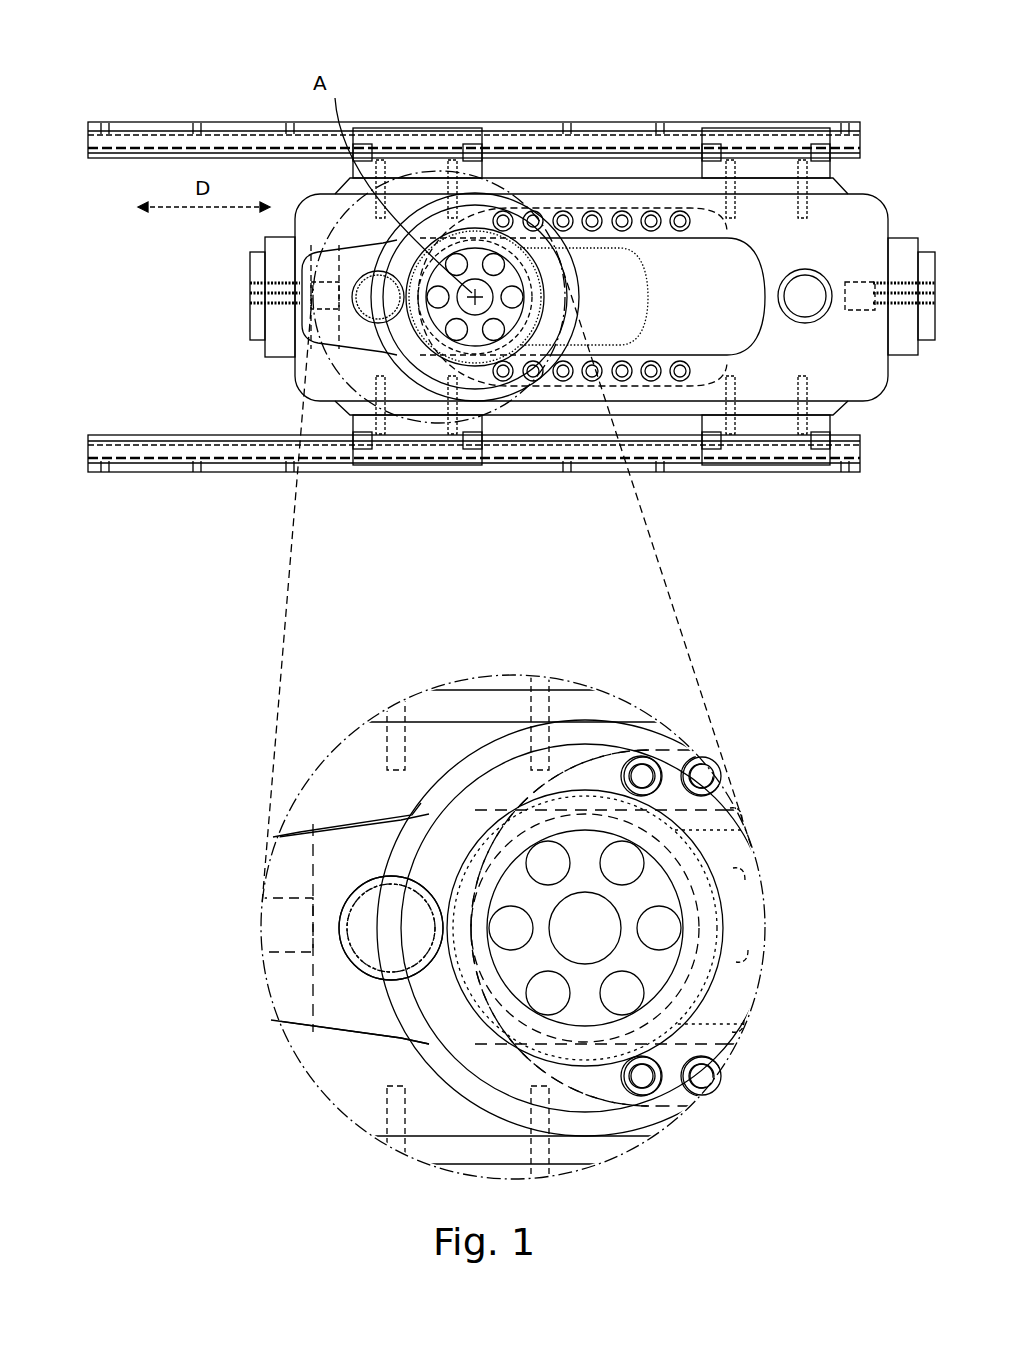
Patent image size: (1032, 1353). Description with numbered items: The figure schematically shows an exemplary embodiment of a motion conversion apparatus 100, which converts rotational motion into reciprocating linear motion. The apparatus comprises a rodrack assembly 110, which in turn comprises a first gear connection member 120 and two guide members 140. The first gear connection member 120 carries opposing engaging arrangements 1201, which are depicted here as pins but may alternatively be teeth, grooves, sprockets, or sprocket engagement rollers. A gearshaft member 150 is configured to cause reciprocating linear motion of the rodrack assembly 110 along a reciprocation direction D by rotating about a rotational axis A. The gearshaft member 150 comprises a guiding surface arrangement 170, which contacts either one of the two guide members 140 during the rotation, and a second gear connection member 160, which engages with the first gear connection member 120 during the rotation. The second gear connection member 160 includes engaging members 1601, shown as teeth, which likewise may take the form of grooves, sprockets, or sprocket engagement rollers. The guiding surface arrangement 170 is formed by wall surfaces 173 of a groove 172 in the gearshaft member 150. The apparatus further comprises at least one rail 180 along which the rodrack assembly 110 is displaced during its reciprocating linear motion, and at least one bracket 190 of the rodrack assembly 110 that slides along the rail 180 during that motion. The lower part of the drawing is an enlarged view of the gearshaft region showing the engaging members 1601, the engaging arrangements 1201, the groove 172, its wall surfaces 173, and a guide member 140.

The motion conversion apparatus 100 is at (134, 678).
The rodrack assembly 110 is at (772, 230).
The first gear connection member 120 is at (651, 210).
The engaging arrangements 1201 is at (715, 787).
The guide members 140 is at (365, 318).
The gearshaft member 150 is at (425, 390).
The second gear connection member 160 is at (552, 348).
The engaging members 1601 is at (740, 903).
The guiding surface arrangement 170 is at (357, 330).
The groove 172 is at (345, 1012).
The wall surfaces 173 is at (318, 856).
The rail 180 is at (141, 440).
The bracket 190 is at (698, 128).